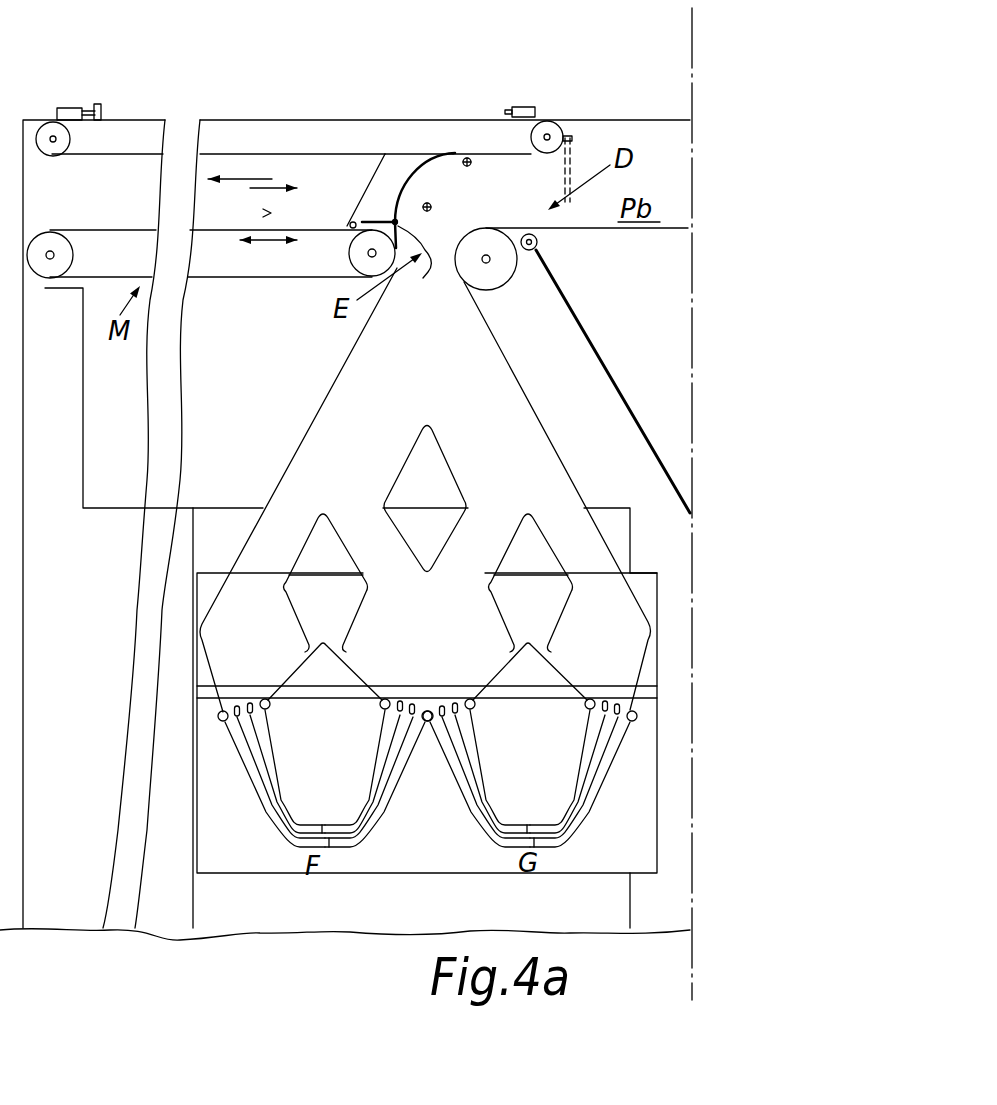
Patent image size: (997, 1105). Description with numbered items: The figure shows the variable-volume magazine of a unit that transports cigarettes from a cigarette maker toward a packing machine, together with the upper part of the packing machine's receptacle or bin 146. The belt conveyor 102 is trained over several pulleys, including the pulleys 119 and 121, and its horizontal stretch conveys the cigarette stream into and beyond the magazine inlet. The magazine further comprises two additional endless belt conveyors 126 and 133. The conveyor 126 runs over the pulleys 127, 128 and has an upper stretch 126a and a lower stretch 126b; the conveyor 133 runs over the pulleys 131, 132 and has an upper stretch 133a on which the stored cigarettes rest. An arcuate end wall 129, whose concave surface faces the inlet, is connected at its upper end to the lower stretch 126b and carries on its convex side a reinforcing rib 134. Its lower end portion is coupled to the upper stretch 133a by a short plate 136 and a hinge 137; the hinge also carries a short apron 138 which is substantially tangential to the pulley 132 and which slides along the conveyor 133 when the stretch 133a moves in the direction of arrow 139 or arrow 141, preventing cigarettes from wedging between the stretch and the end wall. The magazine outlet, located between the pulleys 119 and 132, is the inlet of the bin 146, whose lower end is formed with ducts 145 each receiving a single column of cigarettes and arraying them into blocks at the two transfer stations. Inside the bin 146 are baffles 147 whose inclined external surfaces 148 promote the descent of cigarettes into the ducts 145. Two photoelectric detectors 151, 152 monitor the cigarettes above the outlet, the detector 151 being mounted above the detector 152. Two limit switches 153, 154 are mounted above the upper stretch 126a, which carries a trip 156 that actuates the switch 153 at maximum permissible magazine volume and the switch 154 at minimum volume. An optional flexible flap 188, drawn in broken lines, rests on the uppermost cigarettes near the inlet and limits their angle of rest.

The belt conveyor 102 is at (580, 323).
The pulley 119 is at (497, 282).
The pulley 121 is at (537, 247).
The endless belt conveyor 126 is at (590, 120).
The upper stretch 126a is at (263, 118).
The lower stretch 126b is at (358, 154).
The pulley 127 is at (50, 156).
The pulley 128 is at (550, 127).
The arcuate end wall 129 is at (405, 184).
The pulley 131 is at (45, 233).
The pulley 132 is at (350, 253).
The endless belt conveyor 133 is at (263, 278).
The upper stretch 133a is at (240, 211).
The reinforcing rib 134 is at (369, 178).
The plate 136 is at (356, 222).
The hinge 137 is at (398, 224).
The apron 138 is at (419, 263).
The arrow 139 is at (240, 168).
The arrow 141 is at (273, 192).
The ducts 145 is at (405, 755).
The bin 146 is at (318, 430).
The baffles 147 is at (343, 617).
The external surfaces 148 is at (342, 522).
The photoelectric detector 151 is at (471, 165).
The photoelectric detector 152 is at (431, 207).
The limit switch 153 is at (67, 108).
The limit switch 154 is at (523, 107).
The trip 156 is at (97, 105).
The flexible flap 188 is at (577, 157).